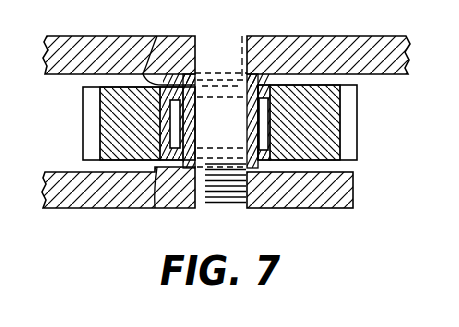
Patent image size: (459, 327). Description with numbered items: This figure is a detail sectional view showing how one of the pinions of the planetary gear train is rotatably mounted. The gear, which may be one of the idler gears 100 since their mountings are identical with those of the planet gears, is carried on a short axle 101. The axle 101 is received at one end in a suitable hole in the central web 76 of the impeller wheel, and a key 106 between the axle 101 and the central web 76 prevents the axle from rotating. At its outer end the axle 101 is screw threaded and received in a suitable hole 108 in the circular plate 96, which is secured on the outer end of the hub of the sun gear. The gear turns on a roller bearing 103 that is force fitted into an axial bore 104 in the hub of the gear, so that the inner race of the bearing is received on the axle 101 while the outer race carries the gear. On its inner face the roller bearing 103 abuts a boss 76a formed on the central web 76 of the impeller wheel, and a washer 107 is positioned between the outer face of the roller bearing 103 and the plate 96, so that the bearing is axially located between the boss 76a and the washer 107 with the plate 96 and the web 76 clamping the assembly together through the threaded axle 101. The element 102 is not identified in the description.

The central web 76 is at (85, 43).
The bosses 76a is at (157, 36).
The axle 101 is at (210, 47).
The key 106 is at (246, 35).
The idler gear 100 is at (88, 118).
The roller bearing 103 is at (173, 122).
The axial bore 104 is at (282, 108).
The circular plate 96 is at (88, 200).
The washer 107 is at (155, 207).
The hole 108 is at (197, 180).
The nut 102 is at (238, 185).